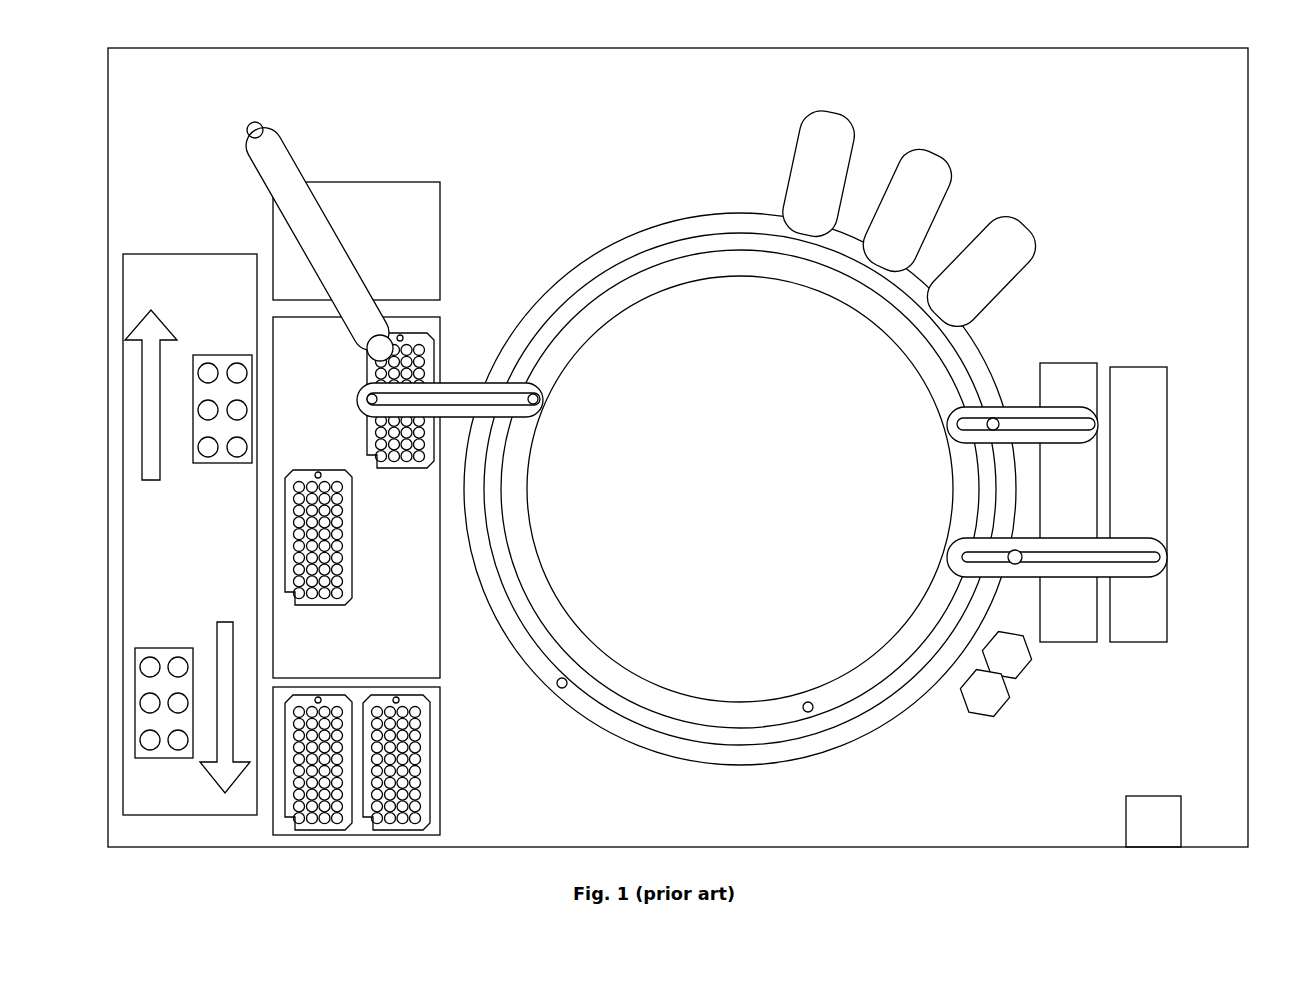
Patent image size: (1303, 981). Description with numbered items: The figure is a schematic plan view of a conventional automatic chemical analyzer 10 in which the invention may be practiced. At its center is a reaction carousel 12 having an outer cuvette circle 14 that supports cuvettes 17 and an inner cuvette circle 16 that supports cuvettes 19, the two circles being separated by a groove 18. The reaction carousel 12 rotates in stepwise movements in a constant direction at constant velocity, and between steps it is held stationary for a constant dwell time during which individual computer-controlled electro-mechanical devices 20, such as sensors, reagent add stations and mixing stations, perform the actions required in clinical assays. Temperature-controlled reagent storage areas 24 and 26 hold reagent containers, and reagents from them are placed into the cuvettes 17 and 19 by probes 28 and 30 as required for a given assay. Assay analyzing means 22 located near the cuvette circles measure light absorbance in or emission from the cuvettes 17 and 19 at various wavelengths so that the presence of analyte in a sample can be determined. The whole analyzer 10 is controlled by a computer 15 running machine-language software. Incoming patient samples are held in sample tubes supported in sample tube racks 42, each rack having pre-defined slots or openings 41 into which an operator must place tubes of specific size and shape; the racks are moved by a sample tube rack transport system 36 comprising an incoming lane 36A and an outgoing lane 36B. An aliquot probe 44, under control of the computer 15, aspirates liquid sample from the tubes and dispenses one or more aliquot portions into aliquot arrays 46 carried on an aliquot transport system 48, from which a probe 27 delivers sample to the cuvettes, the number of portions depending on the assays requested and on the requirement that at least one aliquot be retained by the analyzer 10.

The automatic chemical analyzer 10 is at (107, 148).
The reaction carousel 12 is at (740, 417).
The outer cuvette circle 14 is at (695, 228).
The computer 15 is at (1153, 821).
The inner cuvette circle 16 is at (745, 260).
The cuvettes 17 is at (565, 688).
The groove 18 is at (678, 252).
The cuvettes 19 is at (810, 712).
The electro-mechanical devices 20 is at (1015, 690).
The assay analyzing means 22 is at (858, 132).
The reagent storage area 24 is at (1077, 642).
The reagent storage area 26 is at (1142, 642).
The probe 27 is at (470, 377).
The probe 28 is at (1093, 417).
The probe 30 is at (1163, 542).
The sample tube rack transport system 36 is at (130, 630).
The incoming lane 36A is at (150, 413).
The outgoing lane 36B is at (225, 668).
The slots or openings 41 is at (150, 742).
The sample tube racks 42 is at (368, 193).
The aliquot probe 44 is at (293, 172).
The aliquot arrays 46 is at (422, 338).
The aliquot transport system 48 is at (293, 337).